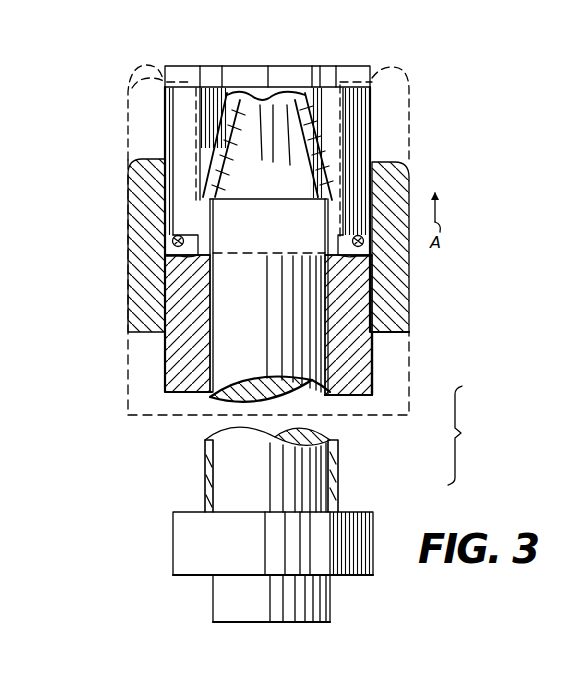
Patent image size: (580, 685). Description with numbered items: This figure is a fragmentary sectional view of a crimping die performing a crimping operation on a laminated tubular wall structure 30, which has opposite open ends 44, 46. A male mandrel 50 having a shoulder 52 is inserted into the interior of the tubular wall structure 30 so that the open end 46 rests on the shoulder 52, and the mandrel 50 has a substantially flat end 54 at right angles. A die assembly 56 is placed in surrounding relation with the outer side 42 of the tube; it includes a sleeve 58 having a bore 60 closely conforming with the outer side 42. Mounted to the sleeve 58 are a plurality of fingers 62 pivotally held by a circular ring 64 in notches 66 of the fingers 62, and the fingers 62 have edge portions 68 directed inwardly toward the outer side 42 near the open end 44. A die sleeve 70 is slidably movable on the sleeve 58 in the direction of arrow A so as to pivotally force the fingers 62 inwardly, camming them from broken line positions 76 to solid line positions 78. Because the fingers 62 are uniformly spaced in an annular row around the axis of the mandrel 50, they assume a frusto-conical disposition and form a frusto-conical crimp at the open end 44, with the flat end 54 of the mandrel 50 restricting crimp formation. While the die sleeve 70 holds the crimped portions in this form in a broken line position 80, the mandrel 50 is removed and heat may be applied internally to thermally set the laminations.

The laminated tubular wall structure 30 is at (205, 452).
The outer side 42 is at (372, 287).
The open end 44 is at (318, 178).
The open end 46 is at (208, 510).
The male mandrel 50 is at (230, 495).
The shoulder 52 is at (350, 512).
The flat end 54 is at (245, 200).
The die assembly 56 is at (240, 232).
The sleeve 58 is at (377, 392).
The bore 60 is at (333, 362).
The fingers 62 is at (265, 92).
The circular ring 64 is at (165, 232).
The notches 66 is at (165, 256).
The edge portions 68 is at (222, 155).
The die sleeve 70 is at (148, 277).
The broken line positions 76 is at (131, 150).
The solid line positions 78 is at (164, 106).
The broken line position 80 is at (138, 70).